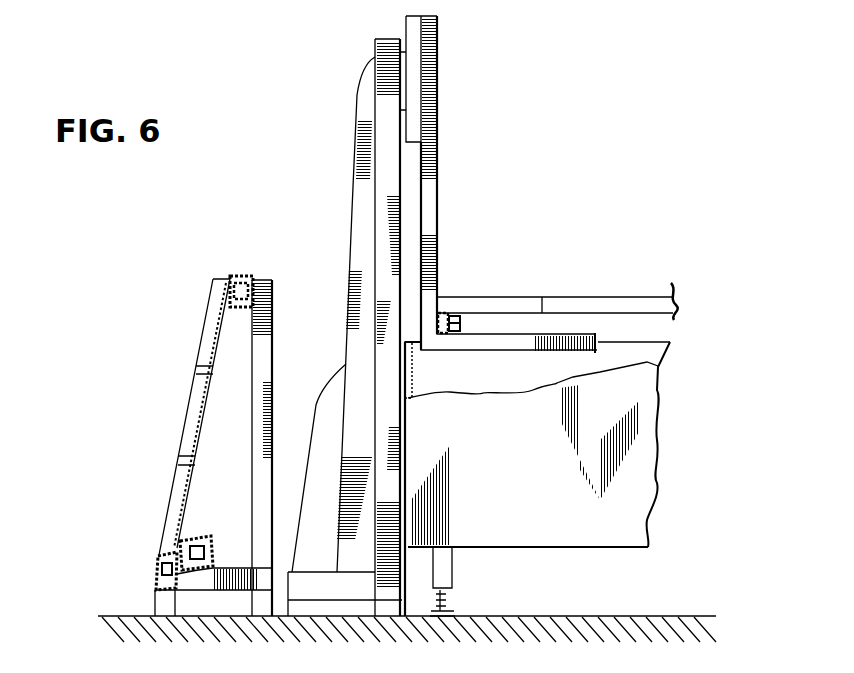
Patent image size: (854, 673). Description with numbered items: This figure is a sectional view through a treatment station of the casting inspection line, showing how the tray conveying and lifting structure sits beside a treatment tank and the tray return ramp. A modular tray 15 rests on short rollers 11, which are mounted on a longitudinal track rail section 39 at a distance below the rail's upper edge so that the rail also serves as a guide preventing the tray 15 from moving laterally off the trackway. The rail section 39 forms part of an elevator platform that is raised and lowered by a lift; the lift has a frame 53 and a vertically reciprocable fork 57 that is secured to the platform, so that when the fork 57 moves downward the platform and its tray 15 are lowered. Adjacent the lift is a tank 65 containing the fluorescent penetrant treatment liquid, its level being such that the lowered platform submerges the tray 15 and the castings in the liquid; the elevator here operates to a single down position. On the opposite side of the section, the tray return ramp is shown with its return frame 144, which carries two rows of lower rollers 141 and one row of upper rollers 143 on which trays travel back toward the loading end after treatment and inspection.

The frame 53 is at (363, 78).
The vertically reciprocable fork 57 is at (433, 182).
The track rail section 39 is at (447, 312).
The short roller 11 is at (457, 320).
The modular tray 15 is at (577, 303).
The upper roller 143 is at (248, 272).
The lower roller 141 is at (150, 562).
The return frame 144 is at (263, 361).
The tank 65 is at (522, 474).